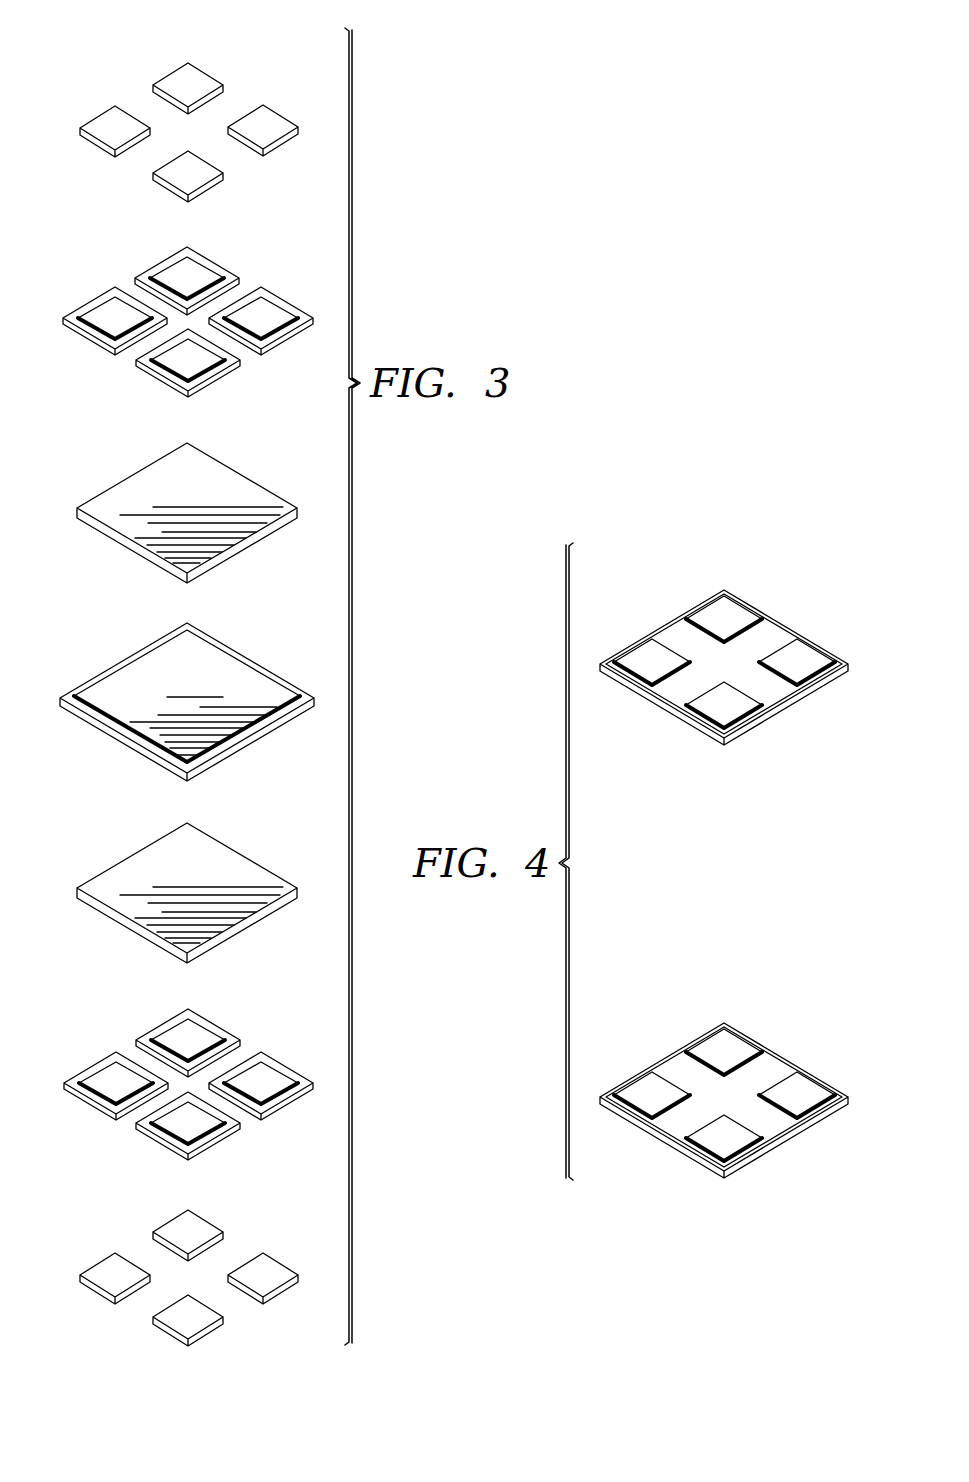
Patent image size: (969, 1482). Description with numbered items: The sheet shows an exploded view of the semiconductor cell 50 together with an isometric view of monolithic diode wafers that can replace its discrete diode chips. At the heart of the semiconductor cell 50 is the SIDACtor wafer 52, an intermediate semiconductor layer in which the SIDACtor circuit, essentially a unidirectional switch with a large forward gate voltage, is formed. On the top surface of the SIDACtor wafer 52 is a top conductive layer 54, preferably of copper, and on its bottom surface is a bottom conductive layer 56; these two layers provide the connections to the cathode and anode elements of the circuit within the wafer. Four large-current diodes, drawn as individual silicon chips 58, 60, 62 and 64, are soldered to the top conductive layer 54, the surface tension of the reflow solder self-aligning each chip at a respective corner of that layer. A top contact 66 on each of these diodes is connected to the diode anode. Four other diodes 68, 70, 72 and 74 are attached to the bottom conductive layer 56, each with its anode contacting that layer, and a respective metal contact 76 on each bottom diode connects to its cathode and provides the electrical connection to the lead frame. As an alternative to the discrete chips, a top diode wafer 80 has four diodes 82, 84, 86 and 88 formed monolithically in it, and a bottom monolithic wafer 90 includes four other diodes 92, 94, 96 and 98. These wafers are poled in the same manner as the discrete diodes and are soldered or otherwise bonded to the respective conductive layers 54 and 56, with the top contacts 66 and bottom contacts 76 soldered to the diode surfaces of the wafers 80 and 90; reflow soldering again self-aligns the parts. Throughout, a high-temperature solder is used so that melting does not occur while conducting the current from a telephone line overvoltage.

In FIG. 3, the semiconductor cell 50 is at (70, 63).
In FIG. 3, the SIDACtor wafer 52 is at (258, 648).
In FIG. 3, the top conductive layer 54 is at (243, 472).
In FIG. 3, the bottom conductive layer 56 is at (243, 853).
In FIG. 3, the diode chip 58 is at (167, 255).
In FIG. 3, the diode chip 60 is at (95, 300).
In FIG. 3, the diode chip 62 is at (162, 367).
In FIG. 3, the diode chip 64 is at (280, 300).
In FIG. 3, the top contact 66 is at (197, 80).
In FIG. 3, the bottom diode 68 is at (222, 1012).
In FIG. 3, the bottom diode 70 is at (80, 1055).
In FIG. 3, the bottom diode 72 is at (150, 1145).
In FIG. 3, the bottom diode 74 is at (295, 1055).
In FIG. 3, the metal contact 76 is at (205, 1218).
In FIG. 4, the top diode wafer 80 is at (775, 605).
In FIG. 4, the diode 82 is at (715, 612).
In FIG. 4, the diode 84 is at (643, 655).
In FIG. 4, the diode 86 is at (717, 708).
In FIG. 4, the diode 88 is at (810, 655).
In FIG. 4, the bottom monolithic wafer 90 is at (775, 1038).
In FIG. 4, the diode 92 is at (715, 1045).
In FIG. 4, the diode 94 is at (643, 1088).
In FIG. 4, the diode 96 is at (717, 1141).
In FIG. 4, the diode 98 is at (810, 1088).